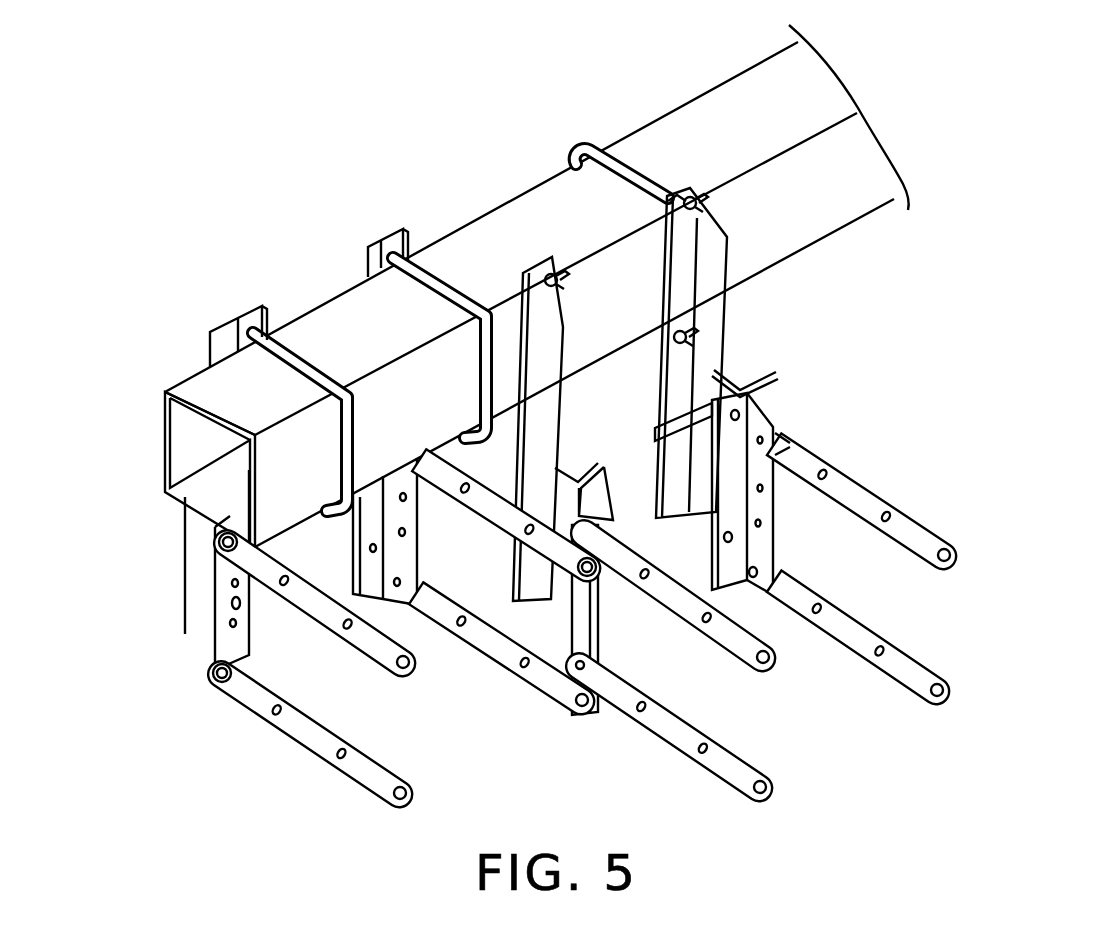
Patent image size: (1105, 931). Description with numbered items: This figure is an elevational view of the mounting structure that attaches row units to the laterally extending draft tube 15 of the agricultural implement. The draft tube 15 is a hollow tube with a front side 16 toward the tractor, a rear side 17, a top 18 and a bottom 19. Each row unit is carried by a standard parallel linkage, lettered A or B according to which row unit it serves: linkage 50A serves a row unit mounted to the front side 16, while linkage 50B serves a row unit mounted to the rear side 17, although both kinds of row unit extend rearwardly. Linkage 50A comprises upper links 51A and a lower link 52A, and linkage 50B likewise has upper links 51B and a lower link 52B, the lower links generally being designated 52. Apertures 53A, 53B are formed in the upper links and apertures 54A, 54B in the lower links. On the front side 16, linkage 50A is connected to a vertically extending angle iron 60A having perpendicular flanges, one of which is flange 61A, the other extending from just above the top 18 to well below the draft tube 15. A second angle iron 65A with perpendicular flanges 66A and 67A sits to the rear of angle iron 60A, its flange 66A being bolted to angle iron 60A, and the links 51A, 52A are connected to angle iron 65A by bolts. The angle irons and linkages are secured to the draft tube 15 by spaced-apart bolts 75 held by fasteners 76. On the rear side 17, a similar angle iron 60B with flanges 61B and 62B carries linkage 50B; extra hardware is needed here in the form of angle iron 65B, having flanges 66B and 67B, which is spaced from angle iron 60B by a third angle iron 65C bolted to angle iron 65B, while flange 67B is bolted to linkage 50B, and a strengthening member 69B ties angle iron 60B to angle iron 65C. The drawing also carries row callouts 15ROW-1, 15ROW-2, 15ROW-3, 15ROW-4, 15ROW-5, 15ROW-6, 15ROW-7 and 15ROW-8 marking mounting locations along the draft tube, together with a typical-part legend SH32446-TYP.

The draft tube 15 is at (878, 210).
The front side 16 is at (165, 440).
The rear side 17 is at (851, 182).
The top 18 is at (777, 120).
The bottom 19 is at (213, 495).
The parallel linkage 50A is at (343, 649).
The parallel linkage 50B is at (835, 468).
The upper links 51A is at (495, 507).
The upper links 51B is at (923, 547).
The lower linkage 52 is at (733, 780).
The lower link 52A is at (372, 772).
The lower link 52B is at (913, 680).
The apertures 53A is at (220, 550).
The apertures 53B is at (958, 568).
The apertures 54A is at (222, 682).
The apertures 54B is at (948, 708).
The angle iron 60A is at (264, 243).
The angle iron 60B is at (684, 390).
The flange 61A is at (267, 312).
The flange 61B is at (667, 233).
The flange 62B is at (560, 375).
The angle iron 65A is at (193, 629).
The angle iron 65B is at (790, 396).
The third angle iron 65C is at (745, 373).
The flange 66A is at (373, 520).
The flange 66B is at (730, 488).
The flange 67A is at (238, 603).
The flange 67B is at (820, 457).
The strengthening member 69B is at (657, 500).
The bolts 75 is at (628, 164).
The fasteners 76 is at (713, 193).
The row position 1 15ROW-1 is at (604, 327).
The row position 2 15ROW-2 is at (780, 345).
The row position 3 15ROW-3 is at (568, 467).
The row position 4 15ROW-4 is at (226, 318).
The row position 5 15ROW-5 is at (373, 240).
The row position 6 15ROW-6 is at (675, 432).
The row position 7 15ROW-7 is at (622, 614).
The row position 8 15ROW-8 is at (784, 508).
The typical shim SH32446-TYP is at (1022, 510).